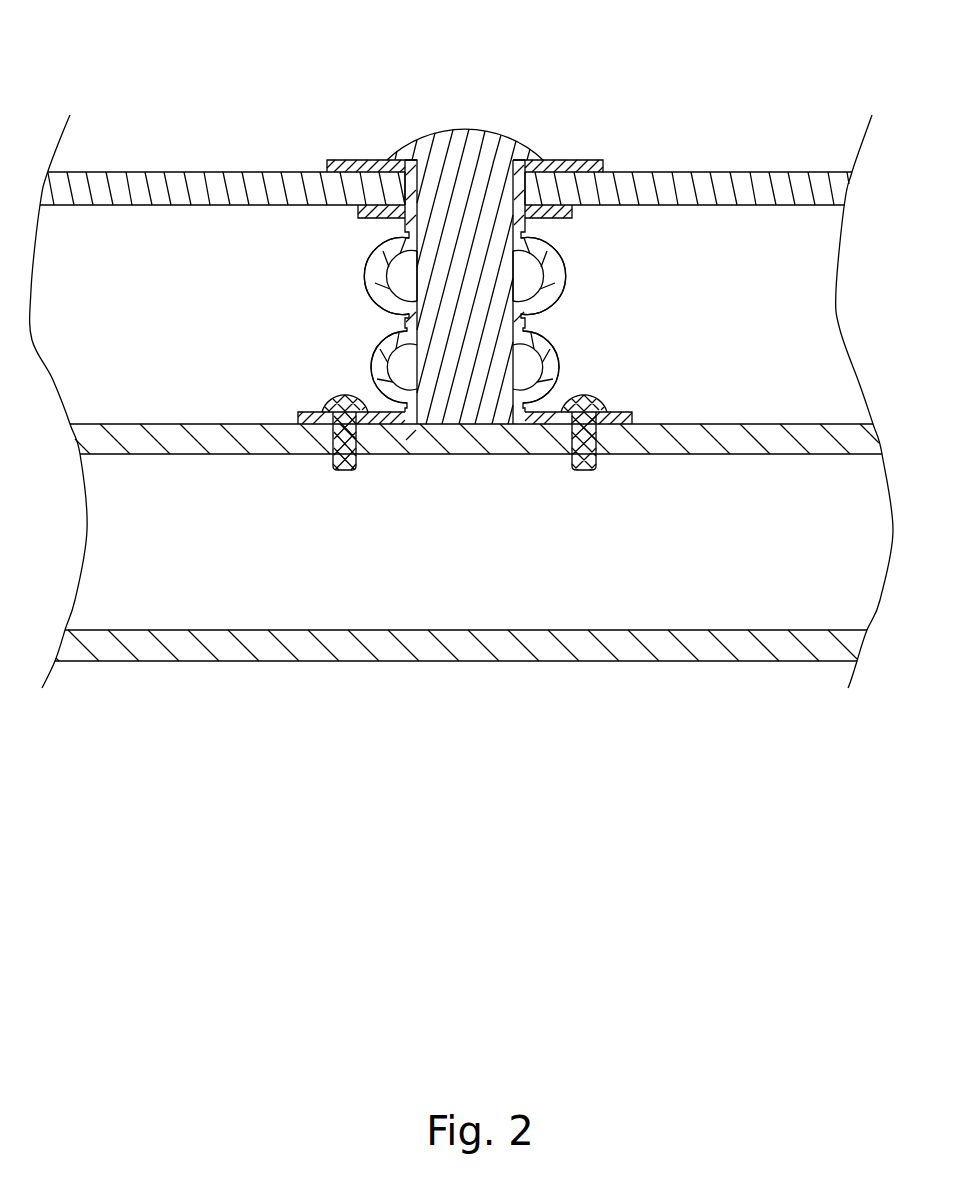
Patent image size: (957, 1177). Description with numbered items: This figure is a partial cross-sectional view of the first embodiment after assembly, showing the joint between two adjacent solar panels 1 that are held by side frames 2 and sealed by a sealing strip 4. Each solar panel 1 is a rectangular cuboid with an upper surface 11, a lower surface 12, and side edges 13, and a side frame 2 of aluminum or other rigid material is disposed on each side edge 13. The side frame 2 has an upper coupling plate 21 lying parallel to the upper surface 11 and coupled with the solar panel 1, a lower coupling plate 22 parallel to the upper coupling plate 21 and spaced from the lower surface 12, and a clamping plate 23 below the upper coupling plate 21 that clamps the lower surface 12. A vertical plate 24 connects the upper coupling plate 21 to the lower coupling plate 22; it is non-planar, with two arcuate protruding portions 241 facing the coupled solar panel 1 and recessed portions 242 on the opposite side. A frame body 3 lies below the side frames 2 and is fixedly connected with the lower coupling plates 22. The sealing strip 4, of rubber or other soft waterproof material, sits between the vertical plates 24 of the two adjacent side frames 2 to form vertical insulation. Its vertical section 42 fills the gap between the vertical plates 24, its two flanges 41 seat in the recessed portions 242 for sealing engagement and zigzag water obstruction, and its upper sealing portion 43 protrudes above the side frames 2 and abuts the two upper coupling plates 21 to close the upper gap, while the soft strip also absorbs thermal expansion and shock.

The solar panel 1 is at (461, 372).
The upper surface 11 is at (297, 169).
The lower surface 12 is at (233, 207).
The side edge 13 is at (415, 163).
The side frame 2 is at (452, 281).
The upper coupling plate 21 is at (358, 160).
The lower coupling plate 22 is at (380, 420).
The clamping plate 23 is at (372, 213).
The vertical plate 24 is at (419, 319).
The arcuate protruding portion 241 is at (386, 293).
The recessed portion 242 is at (379, 262).
The frame body 3 is at (465, 437).
The sealing strip 4 is at (517, 220).
The flange 41 is at (403, 281).
The vertical section 42 is at (469, 315).
The upper sealing portion 43 is at (493, 133).